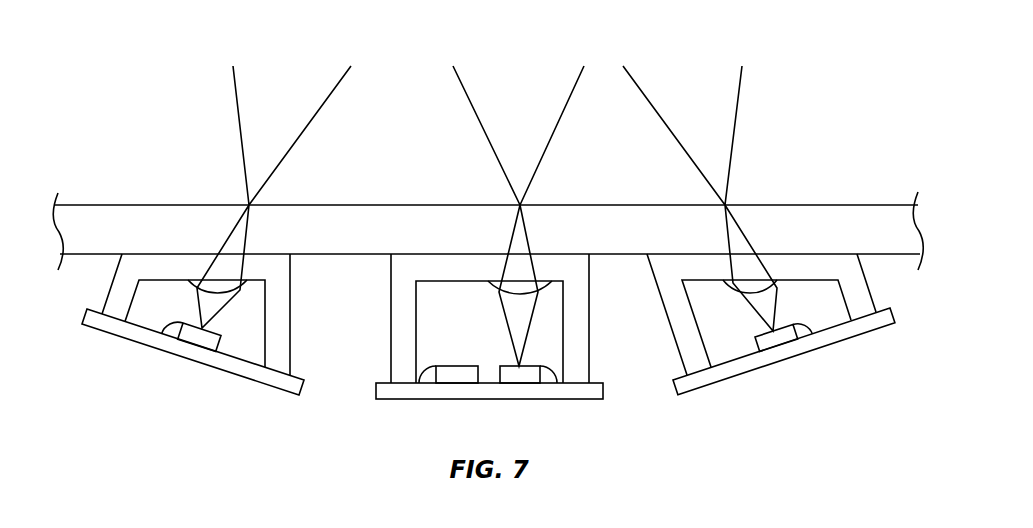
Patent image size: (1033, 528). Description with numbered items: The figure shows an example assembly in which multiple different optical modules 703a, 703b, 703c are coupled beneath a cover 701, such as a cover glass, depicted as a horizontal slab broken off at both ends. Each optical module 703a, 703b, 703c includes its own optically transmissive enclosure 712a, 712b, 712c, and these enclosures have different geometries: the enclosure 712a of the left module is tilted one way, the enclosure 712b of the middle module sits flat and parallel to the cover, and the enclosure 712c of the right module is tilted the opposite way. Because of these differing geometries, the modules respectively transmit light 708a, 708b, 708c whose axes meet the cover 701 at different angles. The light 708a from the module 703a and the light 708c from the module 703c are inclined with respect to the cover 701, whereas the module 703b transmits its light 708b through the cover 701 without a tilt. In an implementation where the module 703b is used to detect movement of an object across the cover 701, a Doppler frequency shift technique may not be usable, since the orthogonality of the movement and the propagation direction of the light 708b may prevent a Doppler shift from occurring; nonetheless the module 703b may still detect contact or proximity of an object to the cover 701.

The cover 701 is at (810, 205).
The optical module 703a is at (196, 324).
The optical module 703b is at (493, 339).
The optical module 703c is at (781, 335).
The light 708a is at (239, 125).
The light 708b is at (546, 152).
The light 708c is at (738, 116).
The optically transmissive enclosure 712a is at (94, 277).
The optically transmissive enclosure 712b is at (376, 368).
The optically transmissive enclosure 712c is at (670, 360).